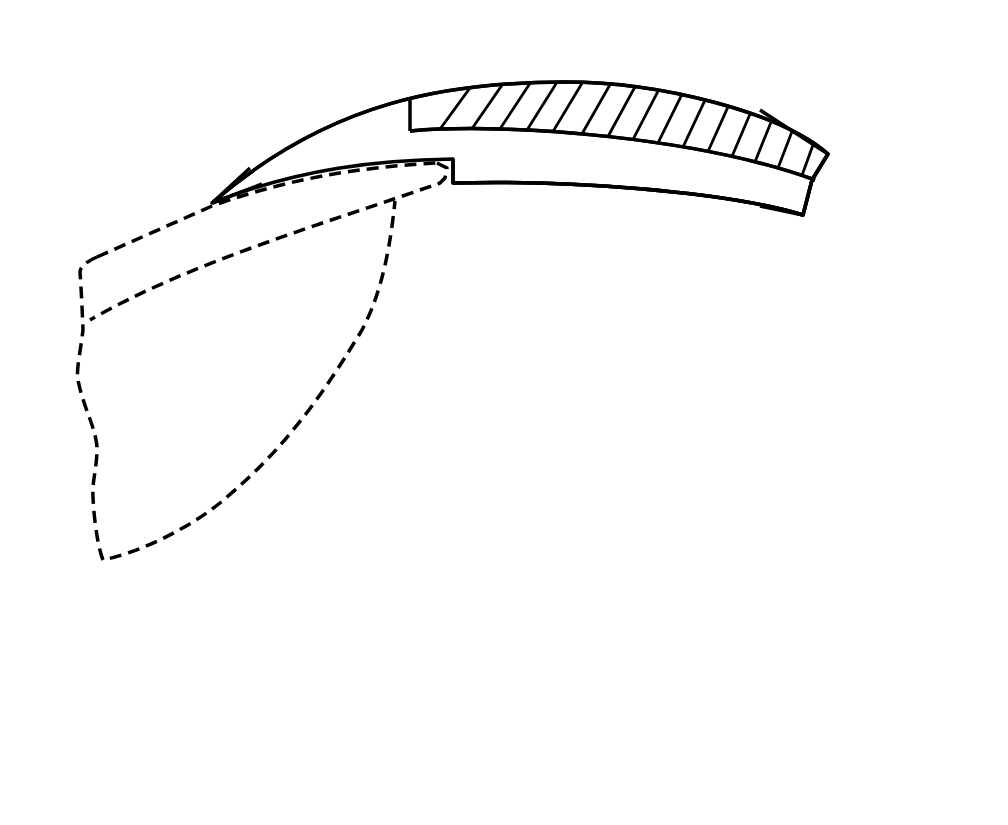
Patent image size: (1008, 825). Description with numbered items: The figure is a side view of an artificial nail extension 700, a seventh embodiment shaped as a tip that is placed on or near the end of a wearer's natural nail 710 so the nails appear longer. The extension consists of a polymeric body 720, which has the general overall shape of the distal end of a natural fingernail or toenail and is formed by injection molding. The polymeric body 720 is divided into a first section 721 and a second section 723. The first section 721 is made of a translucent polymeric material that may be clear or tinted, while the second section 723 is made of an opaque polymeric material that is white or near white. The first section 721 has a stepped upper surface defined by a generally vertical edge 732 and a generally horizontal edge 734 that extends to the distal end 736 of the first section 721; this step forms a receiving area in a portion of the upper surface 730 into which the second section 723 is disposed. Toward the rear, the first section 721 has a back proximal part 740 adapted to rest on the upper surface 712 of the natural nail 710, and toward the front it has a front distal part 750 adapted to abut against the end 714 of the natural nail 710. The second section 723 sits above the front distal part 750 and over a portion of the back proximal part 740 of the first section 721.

The artificial nail extension 700 is at (165, 126).
The natural nail 710 is at (93, 260).
The upper surface of natural nail 712 is at (337, 183).
The end of natural nail 714 is at (443, 185).
The polymeric body 720 is at (282, 145).
The first section 721 is at (377, 103).
The second section 723 is at (808, 138).
The upper surface 730 is at (517, 128).
The generally vertical edge 732 is at (415, 112).
The generally horizontal edge 734 is at (673, 143).
The distal end of first section 736 is at (813, 197).
The back proximal part 740 is at (235, 190).
The front distal part 750 is at (505, 183).